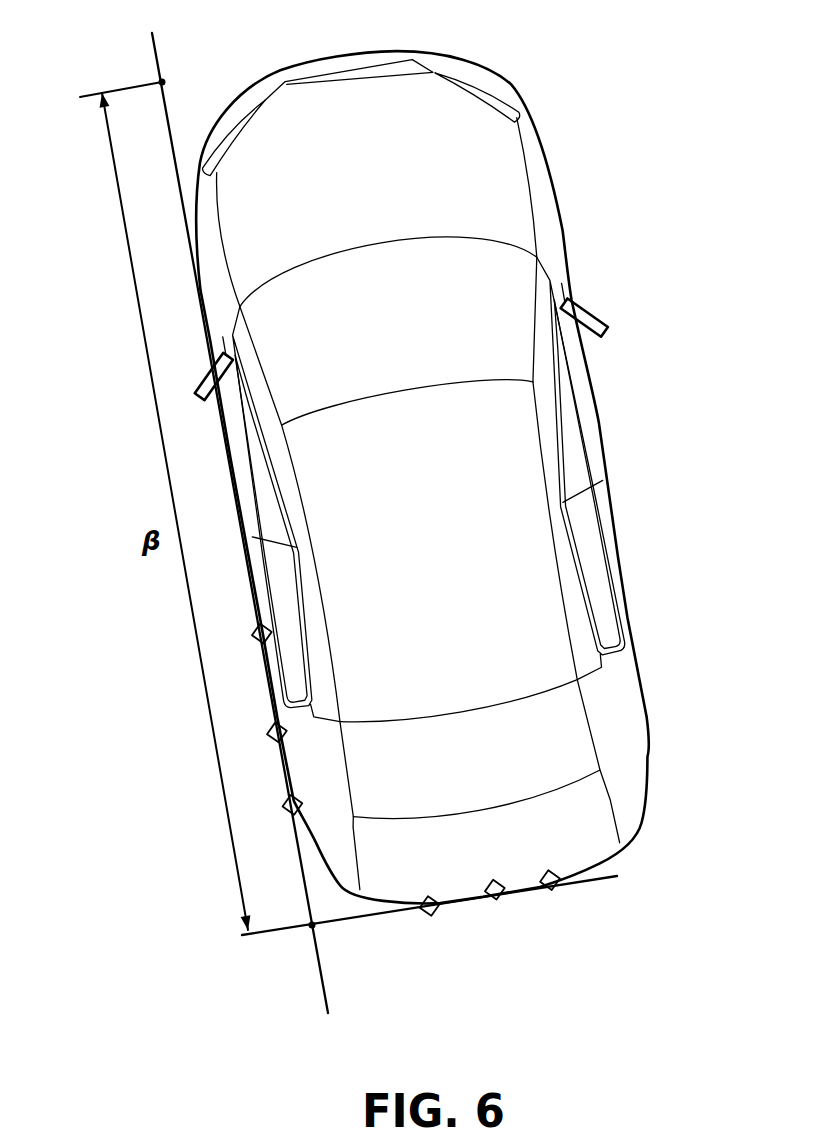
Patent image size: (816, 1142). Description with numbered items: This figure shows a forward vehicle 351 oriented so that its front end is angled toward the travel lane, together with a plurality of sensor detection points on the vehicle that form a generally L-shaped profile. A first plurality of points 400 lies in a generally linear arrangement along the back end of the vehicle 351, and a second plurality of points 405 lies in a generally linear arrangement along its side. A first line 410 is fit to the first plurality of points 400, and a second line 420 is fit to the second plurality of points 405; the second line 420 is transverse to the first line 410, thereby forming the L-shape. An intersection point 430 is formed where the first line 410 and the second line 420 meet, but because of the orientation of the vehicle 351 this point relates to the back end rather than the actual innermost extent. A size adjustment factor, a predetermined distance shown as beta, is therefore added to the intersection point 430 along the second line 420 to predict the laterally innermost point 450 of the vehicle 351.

The vehicle 351 is at (622, 570).
The first plurality of points 400 is at (542, 893).
The second plurality of points 405 is at (288, 803).
The first line 410 is at (593, 882).
The second line 420 is at (323, 991).
The intersection point 430 is at (311, 927).
The laterally innermost point 450 is at (162, 82).